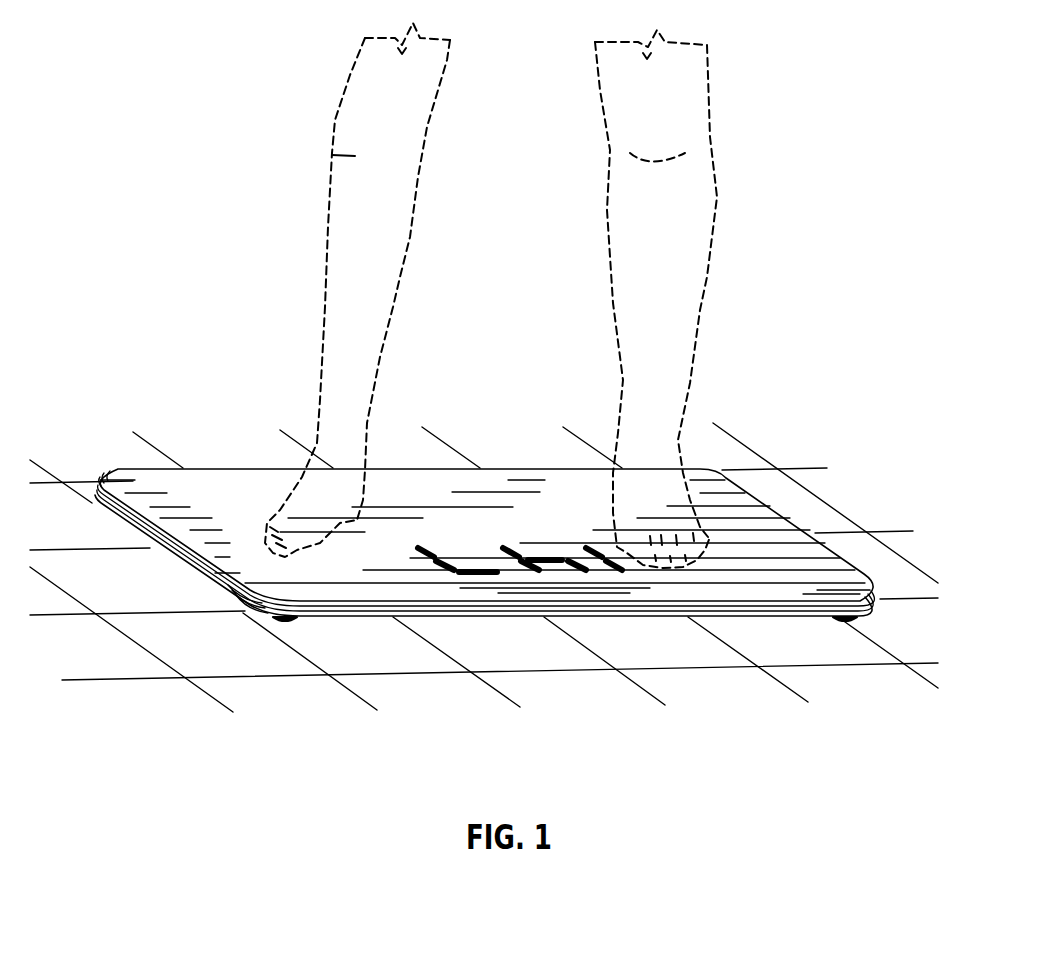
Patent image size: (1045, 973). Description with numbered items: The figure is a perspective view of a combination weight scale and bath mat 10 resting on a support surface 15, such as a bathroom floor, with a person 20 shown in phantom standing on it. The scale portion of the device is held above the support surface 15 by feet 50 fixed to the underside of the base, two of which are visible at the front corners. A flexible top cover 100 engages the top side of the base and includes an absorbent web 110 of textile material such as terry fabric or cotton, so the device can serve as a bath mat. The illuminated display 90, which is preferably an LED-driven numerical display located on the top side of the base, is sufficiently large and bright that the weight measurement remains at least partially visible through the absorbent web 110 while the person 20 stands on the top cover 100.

The combination weight scale and bath mat 10 is at (522, 449).
The support surface 15 is at (232, 666).
The person 20 is at (713, 154).
The feet 50 is at (283, 621).
The illuminated display 90 is at (543, 515).
The flexible top cover 100 is at (400, 480).
The absorbent web 110 is at (480, 541).